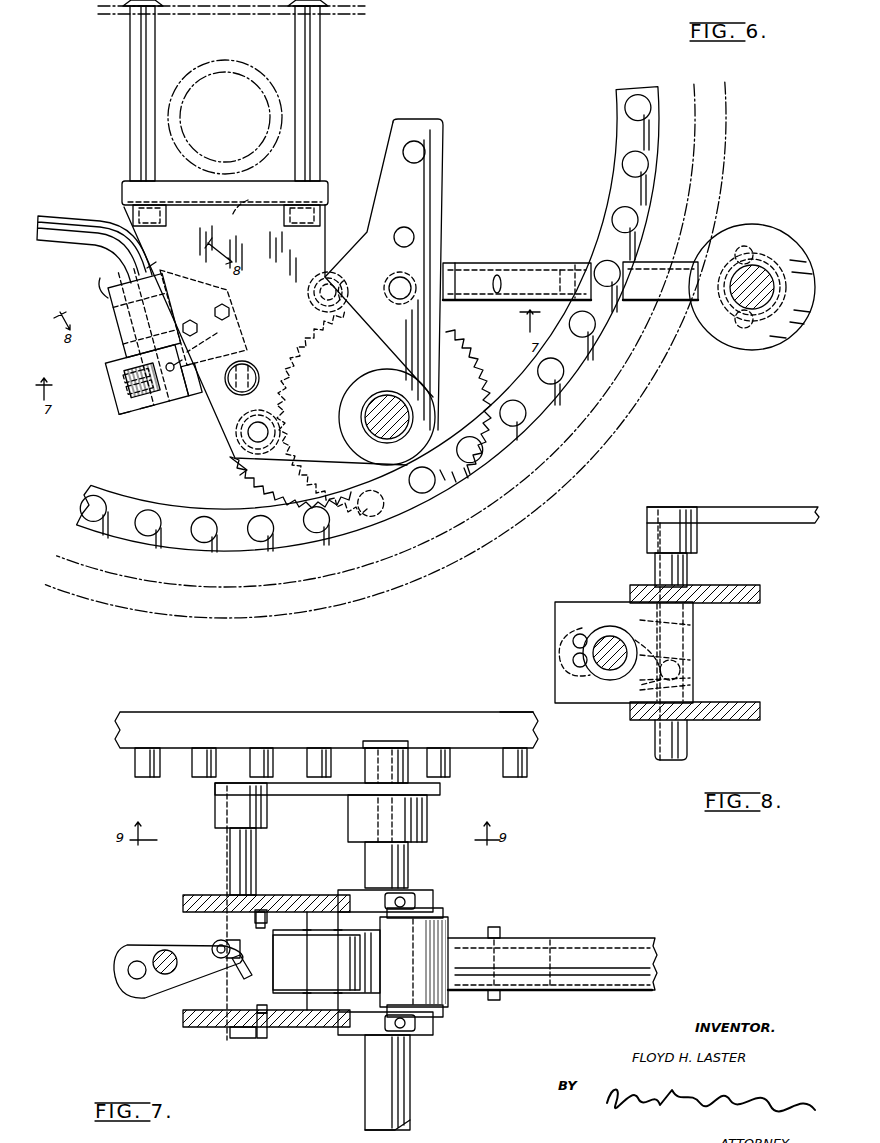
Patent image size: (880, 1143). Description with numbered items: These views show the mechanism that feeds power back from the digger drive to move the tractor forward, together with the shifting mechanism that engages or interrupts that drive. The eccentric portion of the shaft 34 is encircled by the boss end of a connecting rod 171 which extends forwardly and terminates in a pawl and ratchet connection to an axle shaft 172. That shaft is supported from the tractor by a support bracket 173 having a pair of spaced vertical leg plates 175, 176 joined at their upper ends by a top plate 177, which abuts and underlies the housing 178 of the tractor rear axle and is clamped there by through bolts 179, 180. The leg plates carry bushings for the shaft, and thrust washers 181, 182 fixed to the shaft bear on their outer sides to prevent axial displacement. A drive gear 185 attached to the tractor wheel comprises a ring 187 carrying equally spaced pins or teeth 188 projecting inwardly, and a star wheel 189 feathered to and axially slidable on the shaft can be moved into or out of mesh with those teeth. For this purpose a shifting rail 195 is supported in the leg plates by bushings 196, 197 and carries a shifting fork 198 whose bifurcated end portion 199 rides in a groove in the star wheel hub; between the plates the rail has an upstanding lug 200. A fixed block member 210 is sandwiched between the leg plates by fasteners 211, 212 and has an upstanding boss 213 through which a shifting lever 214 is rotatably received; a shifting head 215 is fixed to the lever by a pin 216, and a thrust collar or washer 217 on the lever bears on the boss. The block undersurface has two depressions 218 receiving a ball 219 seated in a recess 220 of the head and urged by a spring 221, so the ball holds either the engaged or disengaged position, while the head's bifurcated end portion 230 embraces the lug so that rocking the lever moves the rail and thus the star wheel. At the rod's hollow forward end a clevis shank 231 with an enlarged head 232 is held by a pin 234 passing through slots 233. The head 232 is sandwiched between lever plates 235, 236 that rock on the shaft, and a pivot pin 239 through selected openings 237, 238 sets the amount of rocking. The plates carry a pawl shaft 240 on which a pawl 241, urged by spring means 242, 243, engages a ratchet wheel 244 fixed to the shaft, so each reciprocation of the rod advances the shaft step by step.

In FIG. 6, the shaft 34 is at (758, 264).
In FIG. 6, the connecting rod 171 is at (549, 262).
In FIG. 7, the connecting rod 171 is at (632, 936).
In FIG. 6, the axle shaft 172 is at (388, 402).
In FIG. 7, the axle shaft 172 is at (411, 1085).
In FIG. 6, the support bracket 173 is at (340, 182).
In FIG. 7, the leg plate 175 is at (290, 895).
In FIG. 8, the leg plate 175 is at (745, 702).
In FIG. 6, the leg plate 176 is at (318, 252).
In FIG. 7, the leg plate 176 is at (300, 1028).
In FIG. 8, the leg plate 176 is at (742, 604).
In FIG. 6, the top plate 177 is at (250, 199).
In FIG. 6, the housing 178 is at (256, 72).
In FIG. 6, the bolt 179 is at (130, 92).
In FIG. 6, the bolt 180 is at (319, 95).
In FIG. 7, the thrust washer 181 is at (434, 893).
In FIG. 7, the thrust washer 182 is at (434, 1030).
In FIG. 7, the drive gear 185 is at (471, 703).
In FIG. 6, the ring 187 is at (618, 137).
In FIG. 7, the ring 187 is at (513, 712).
In FIG. 6, the pins or teeth 188 is at (622, 210).
In FIG. 7, the pins or teeth 188 is at (482, 770).
In FIG. 7, the drive gear or star wheel 189 is at (427, 824).
In FIG. 6, the shifting rail 195 is at (233, 392).
In FIG. 7, the shifting rail 195 is at (230, 852).
In FIG. 8, the shifting rail 195 is at (690, 576).
In FIG. 7, the bushing 196 is at (262, 1038).
In FIG. 7, the bushing 197 is at (262, 897).
In FIG. 7, the shifting fork 198 is at (306, 792).
In FIG. 8, the shifting fork 198 is at (746, 510).
In FIG. 7, the bifurcated end portion 199 is at (410, 765).
In FIG. 6, the upstanding lug 200 is at (246, 325).
In FIG. 7, the upstanding lug 200 is at (217, 941).
In FIG. 8, the upstanding lug 200 is at (686, 671).
In FIG. 6, the fixed block member 210 is at (141, 337).
In FIG. 8, the fixed block member 210 is at (590, 702).
In FIG. 6, the fastener 211 is at (192, 318).
In FIG. 6, the fastener 212 is at (229, 308).
In FIG. 6, the upstanding boss 213 is at (93, 281).
In FIG. 6, the shifting lever 214 is at (88, 215).
In FIG. 7, the shifting lever 214 is at (160, 952).
In FIG. 8, the shifting lever 214 is at (606, 640).
In FIG. 6, the shifting head 215 is at (195, 394).
In FIG. 7, the shifting head 215 is at (164, 994).
In FIG. 8, the shifting head 215 is at (558, 626).
In FIG. 6, the pin 216 is at (184, 360).
In FIG. 6, the thrust collar or washer 217 is at (152, 270).
In FIG. 6, the openings or depressions 218 is at (137, 381).
In FIG. 6, the ball 219 is at (132, 391).
In FIG. 6, the recess 220 is at (135, 424).
In FIG. 7, the recess 220 is at (128, 971).
In FIG. 6, the spring 221 is at (162, 421).
In FIG. 7, the bifurcated end portion 230 is at (238, 972).
In FIG. 6, the shank 231 is at (511, 268).
In FIG. 7, the shank 231 is at (556, 940).
In FIG. 6, the enlarged head 232 is at (447, 266).
In FIG. 7, the enlarged head 232 is at (449, 937).
In FIG. 6, the openings or slots 233 is at (494, 276).
In FIG. 6, the pin 234 is at (502, 286).
In FIG. 7, the pin 234 is at (498, 927).
In FIG. 7, the lever plate 235 is at (443, 912).
In FIG. 6, the lever plate 236 is at (440, 168).
In FIG. 7, the lever plate 236 is at (444, 1010).
In FIG. 6, the opening 237 is at (418, 148).
In FIG. 6, the opening 238 is at (410, 243).
In FIG. 6, the pivot pin 239 is at (395, 278).
In FIG. 6, the pawl shaft 240 is at (347, 296).
In FIG. 6, the pawl 241 is at (318, 292).
In FIG. 7, the pawl 241 is at (263, 1014).
In FIG. 7, the spring means 242 is at (324, 940).
In FIG. 7, the spring means 243 is at (320, 1028).
In FIG. 6, the ratchet wheel 244 is at (478, 392).
In FIG. 7, the ratchet wheel 244 is at (303, 928).